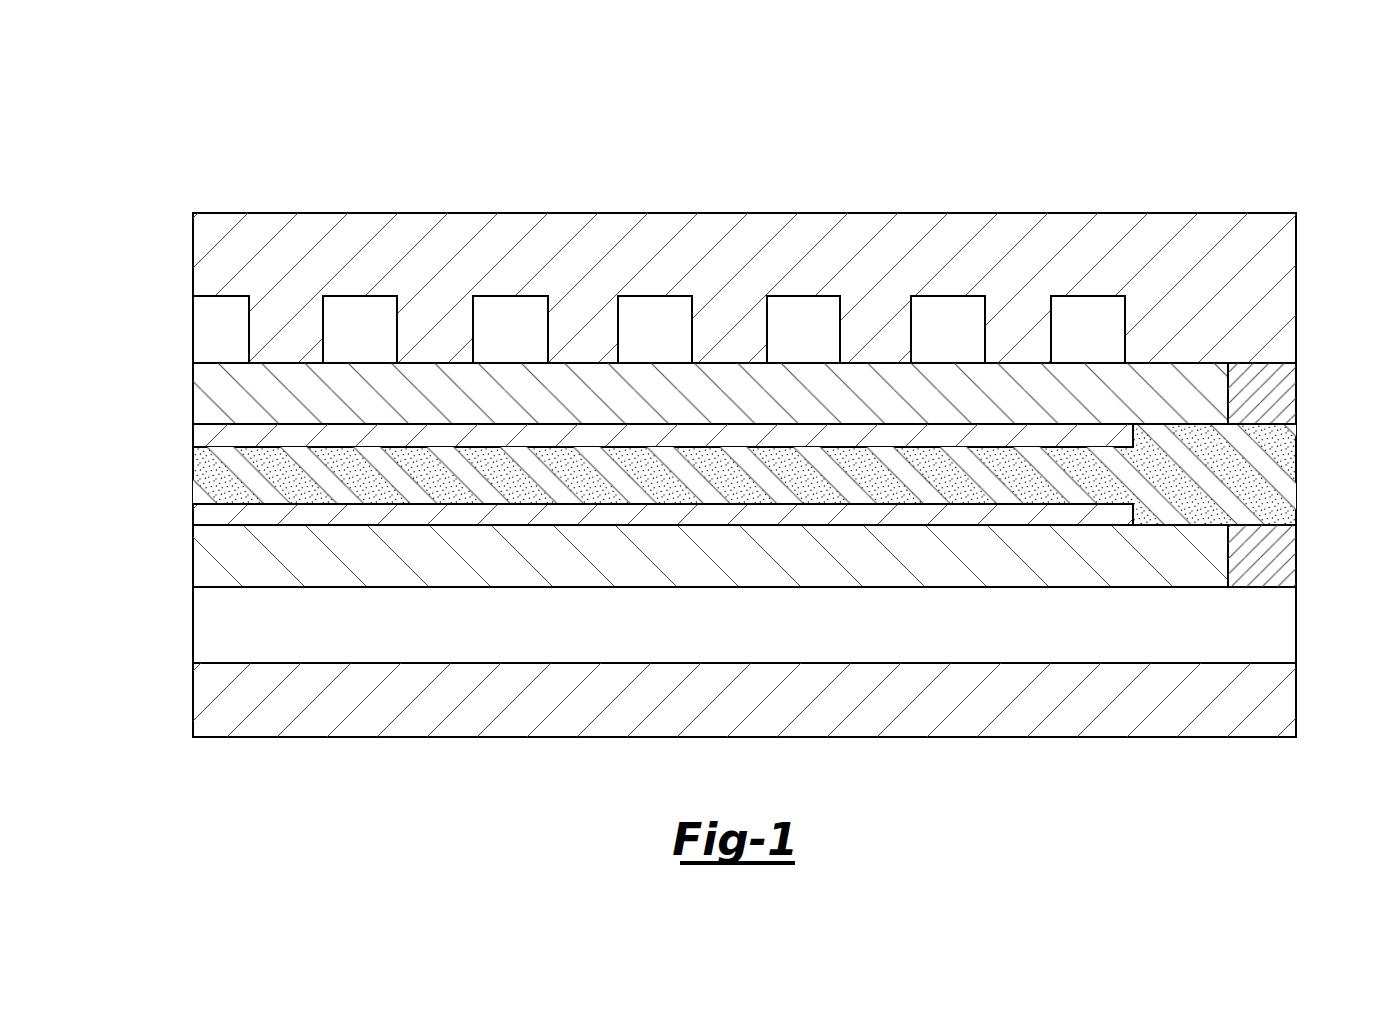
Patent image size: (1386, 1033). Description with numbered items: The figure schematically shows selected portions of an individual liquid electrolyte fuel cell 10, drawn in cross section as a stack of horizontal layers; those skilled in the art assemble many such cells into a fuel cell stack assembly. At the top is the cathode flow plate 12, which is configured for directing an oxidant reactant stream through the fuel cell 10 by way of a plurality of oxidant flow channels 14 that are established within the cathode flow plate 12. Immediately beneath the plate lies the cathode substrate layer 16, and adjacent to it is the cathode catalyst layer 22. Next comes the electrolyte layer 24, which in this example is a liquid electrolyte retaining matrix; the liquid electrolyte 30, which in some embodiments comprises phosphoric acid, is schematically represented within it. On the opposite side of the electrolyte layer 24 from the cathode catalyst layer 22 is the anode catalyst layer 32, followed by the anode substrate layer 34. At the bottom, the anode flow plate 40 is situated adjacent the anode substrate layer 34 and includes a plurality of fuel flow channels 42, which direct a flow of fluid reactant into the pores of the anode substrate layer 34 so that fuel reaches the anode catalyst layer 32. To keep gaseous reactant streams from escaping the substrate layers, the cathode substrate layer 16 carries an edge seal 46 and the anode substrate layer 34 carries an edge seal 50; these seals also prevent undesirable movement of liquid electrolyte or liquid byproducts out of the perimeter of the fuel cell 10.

The liquid electrolyte fuel cell 10 is at (1262, 108).
The cathode flow plate 12 is at (1117, 228).
The oxidant flow channels 14 is at (231, 340).
The cathode substrate layer 16 is at (205, 409).
The cathode catalyst layer 22 is at (205, 440).
The electrolyte layer 24 is at (205, 475).
The liquid electrolyte 30 is at (1280, 507).
The anode catalyst layer 32 is at (205, 519).
The anode substrate layer 34 is at (205, 563).
The anode flow plate 40 is at (217, 708).
The fuel flow channels 42 is at (238, 626).
The edge seal 46 is at (1282, 379).
The edge seal 50 is at (1297, 557).